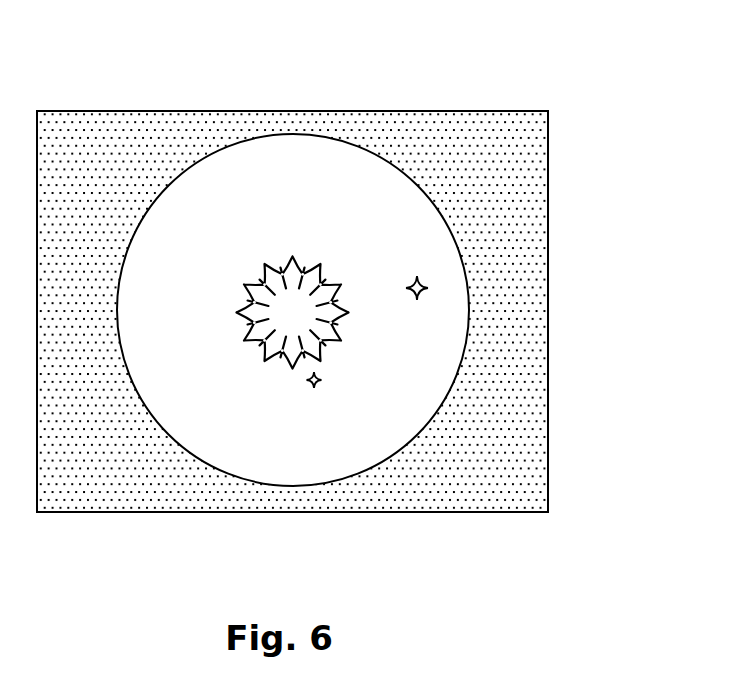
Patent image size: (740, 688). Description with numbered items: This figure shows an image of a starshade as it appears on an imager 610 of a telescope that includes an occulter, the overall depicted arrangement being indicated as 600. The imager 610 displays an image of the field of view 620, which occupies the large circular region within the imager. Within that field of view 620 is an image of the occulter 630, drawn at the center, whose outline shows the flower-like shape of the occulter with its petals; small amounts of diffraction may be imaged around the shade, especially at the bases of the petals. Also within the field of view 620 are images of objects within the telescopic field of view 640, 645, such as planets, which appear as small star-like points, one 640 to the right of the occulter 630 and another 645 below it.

The patterned structure / device 600 is at (584, 467).
The imager 610 is at (350, 310).
The field of view 620 is at (338, 258).
The occulter 630 is at (309, 206).
The object within the telescopic field of view 640 is at (521, 327).
The object within the telescopic field of view 645 is at (394, 484).